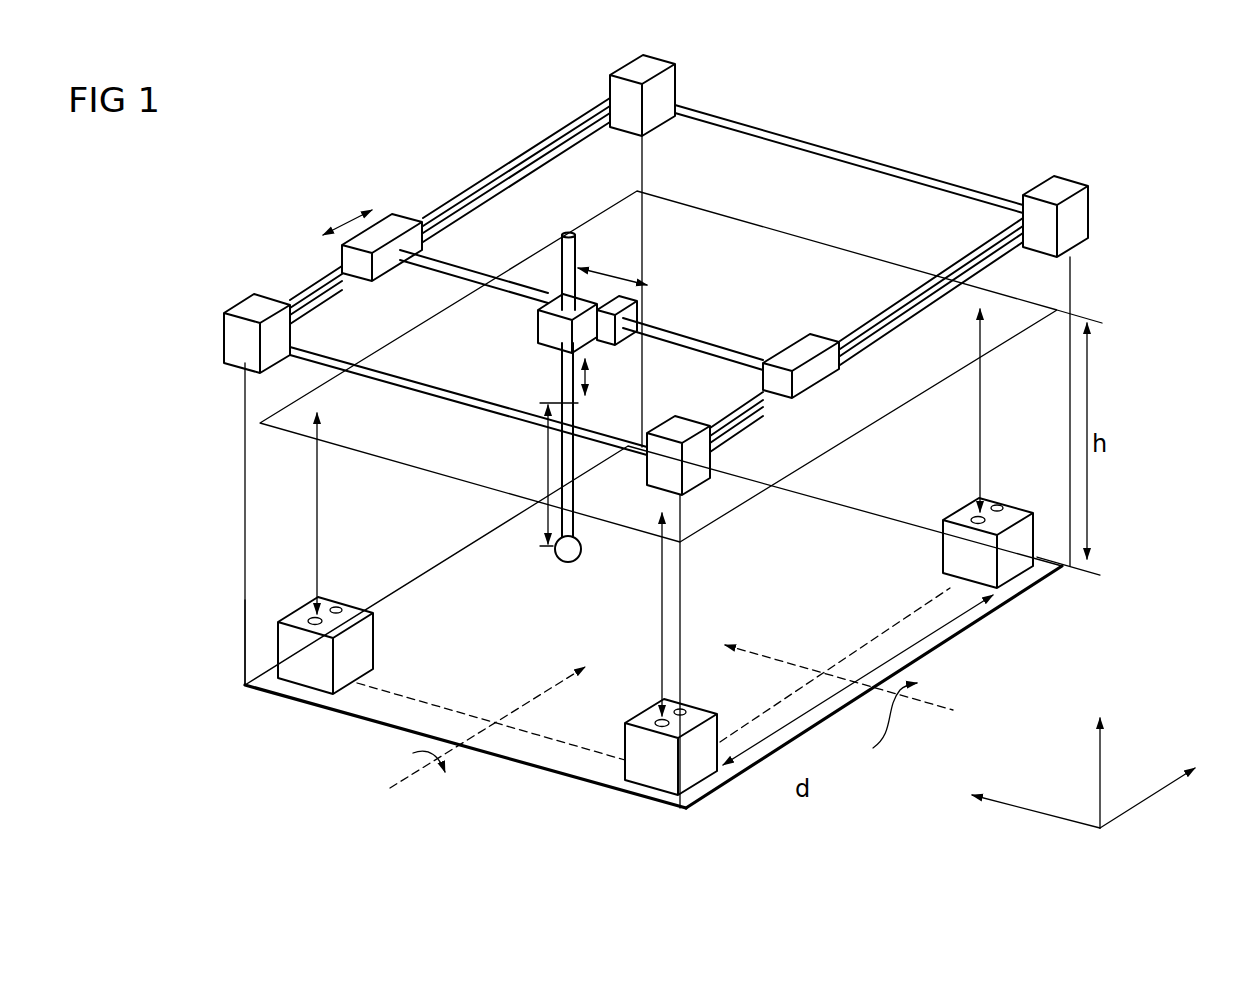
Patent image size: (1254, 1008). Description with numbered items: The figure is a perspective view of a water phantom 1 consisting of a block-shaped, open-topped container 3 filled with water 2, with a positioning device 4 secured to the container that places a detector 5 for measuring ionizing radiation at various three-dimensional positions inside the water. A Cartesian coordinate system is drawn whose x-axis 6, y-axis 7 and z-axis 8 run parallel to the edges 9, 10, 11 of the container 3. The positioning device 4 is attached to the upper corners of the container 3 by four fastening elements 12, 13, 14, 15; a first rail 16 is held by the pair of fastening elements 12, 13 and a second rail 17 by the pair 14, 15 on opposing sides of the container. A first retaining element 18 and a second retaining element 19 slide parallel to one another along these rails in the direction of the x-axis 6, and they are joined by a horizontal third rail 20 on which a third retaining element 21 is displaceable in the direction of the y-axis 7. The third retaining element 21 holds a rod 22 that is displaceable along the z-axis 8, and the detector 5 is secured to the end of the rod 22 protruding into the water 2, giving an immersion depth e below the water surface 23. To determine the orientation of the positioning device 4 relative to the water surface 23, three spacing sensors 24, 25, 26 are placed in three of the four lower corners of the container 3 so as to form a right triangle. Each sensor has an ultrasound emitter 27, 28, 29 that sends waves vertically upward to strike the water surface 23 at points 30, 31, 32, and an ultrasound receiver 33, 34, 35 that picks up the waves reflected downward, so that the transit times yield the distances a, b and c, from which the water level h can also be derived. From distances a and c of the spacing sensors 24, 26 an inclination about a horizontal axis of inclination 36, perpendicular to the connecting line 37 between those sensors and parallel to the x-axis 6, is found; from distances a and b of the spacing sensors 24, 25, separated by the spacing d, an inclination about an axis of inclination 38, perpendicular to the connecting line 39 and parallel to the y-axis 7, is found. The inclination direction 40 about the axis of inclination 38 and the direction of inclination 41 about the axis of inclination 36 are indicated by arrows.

The water phantom 1 is at (176, 262).
The water 2 is at (287, 480).
The container 3 is at (245, 602).
The positioning device 4 is at (317, 260).
The detector 5 is at (565, 567).
The x-axis 6 is at (1157, 793).
The y-axis 7 is at (1013, 802).
The z-axis 8 is at (1098, 747).
The edge of the container 9 is at (727, 780).
The edge of the container 10 is at (577, 783).
The edge of the container 11 is at (683, 573).
The fastening element 12 is at (233, 342).
The fastening element 13 is at (670, 93).
The fastening element 14 is at (665, 423).
The fastening element 15 is at (1082, 218).
The first rail 16 is at (520, 160).
The second rail 17 is at (928, 290).
The first retaining element 18 is at (398, 215).
The second retaining element 19 is at (793, 347).
The third rail 20 is at (494, 288).
The third retaining element 21 is at (605, 347).
The rod 22 is at (562, 380).
The water surface 23 is at (288, 417).
The spacing sensor 24 is at (650, 777).
The spacing sensor 25 is at (1023, 570).
The spacing sensor 26 is at (307, 675).
The ultrasound emitter 27 is at (656, 723).
The ultrasound emitter 28 is at (977, 518).
The ultrasound emitter 29 is at (313, 619).
The point on the water surface 30 is at (660, 508).
The point on the water surface 31 is at (982, 310).
The point on the water surface 32 is at (318, 412).
The ultrasound receiver 33 is at (680, 707).
The ultrasound receiver 34 is at (998, 507).
The ultrasound receiver 35 is at (337, 611).
The axis of inclination 36 is at (527, 697).
The connecting line 37 is at (423, 697).
The axis of inclination 38 is at (787, 660).
The connecting line 39 is at (892, 635).
The inclination direction 40 is at (882, 731).
The direction of inclination 41 is at (450, 777).